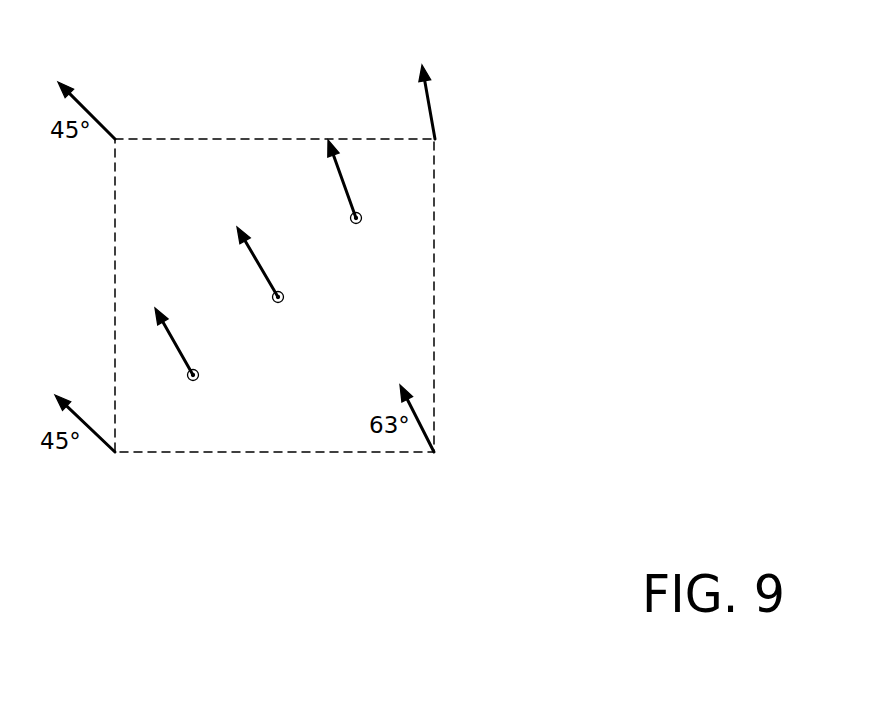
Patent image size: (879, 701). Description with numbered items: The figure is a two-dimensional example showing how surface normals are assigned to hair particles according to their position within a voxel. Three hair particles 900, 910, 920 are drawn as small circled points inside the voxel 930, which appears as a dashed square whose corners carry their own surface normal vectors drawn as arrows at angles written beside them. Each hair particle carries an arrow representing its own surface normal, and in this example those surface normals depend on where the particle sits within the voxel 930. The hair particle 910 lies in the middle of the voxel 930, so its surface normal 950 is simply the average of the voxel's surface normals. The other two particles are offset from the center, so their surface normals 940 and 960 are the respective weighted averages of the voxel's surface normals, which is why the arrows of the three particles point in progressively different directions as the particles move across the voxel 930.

The hair particle 900 is at (361, 212).
The hair particle 910 is at (284, 293).
The hair particle 920 is at (199, 372).
The voxel 930 is at (436, 134).
The surface normal 940 is at (337, 150).
The surface normal 950 is at (245, 228).
The surface normal 960 is at (160, 305).